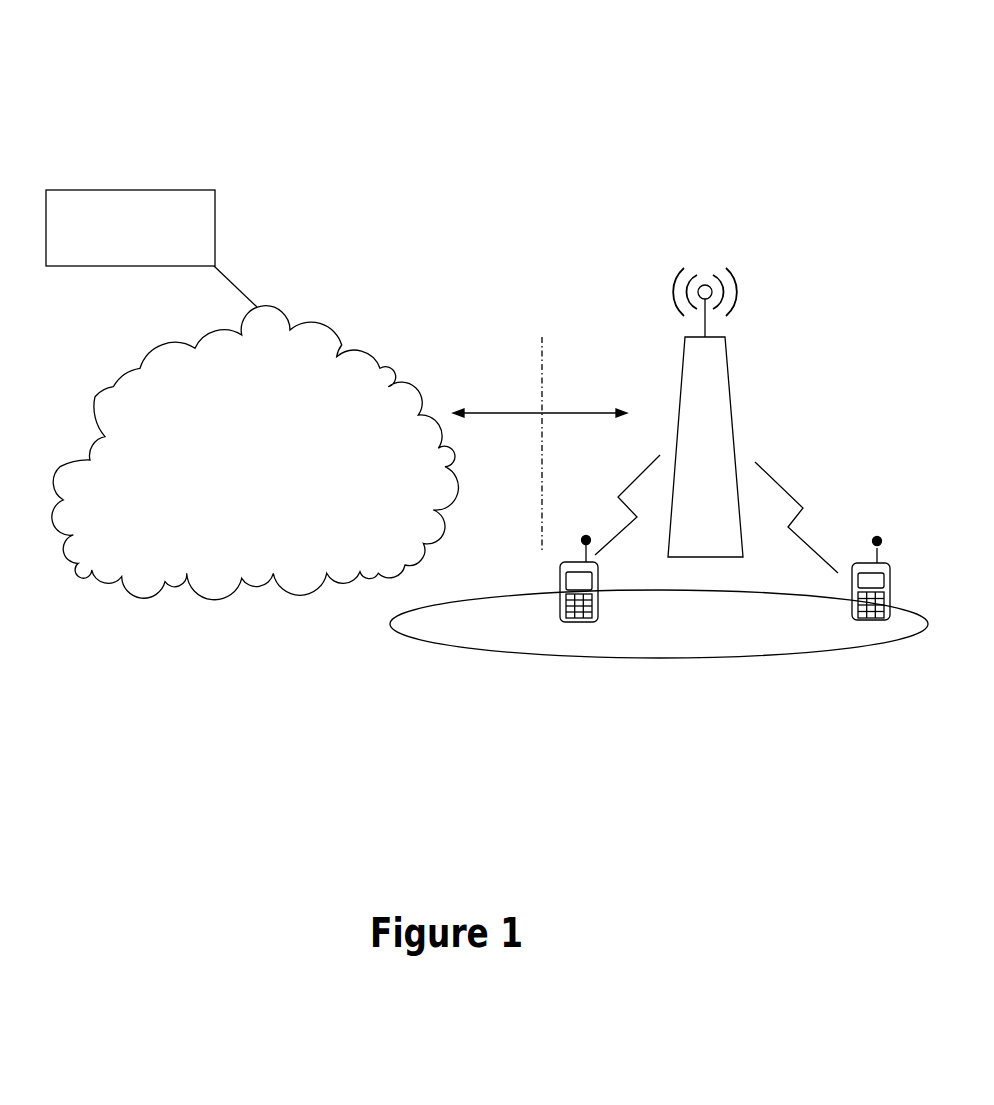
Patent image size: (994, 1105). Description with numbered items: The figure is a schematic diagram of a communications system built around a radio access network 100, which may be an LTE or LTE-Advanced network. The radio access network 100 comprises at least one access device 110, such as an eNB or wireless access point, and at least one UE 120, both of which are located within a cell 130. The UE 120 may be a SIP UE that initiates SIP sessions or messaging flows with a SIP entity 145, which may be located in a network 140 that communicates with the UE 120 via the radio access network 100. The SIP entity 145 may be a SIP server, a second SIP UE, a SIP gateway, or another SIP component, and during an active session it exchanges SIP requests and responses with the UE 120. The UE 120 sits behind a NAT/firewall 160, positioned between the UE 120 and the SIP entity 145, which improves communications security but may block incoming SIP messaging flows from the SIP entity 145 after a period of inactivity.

The radio access network 100 is at (457, 104).
The access device 110 is at (727, 360).
The UE 120 is at (575, 562).
The cell 130 is at (682, 660).
The network 140 is at (333, 325).
The SIP entity 145 is at (116, 190).
The NAT/firewall 160 is at (543, 386).